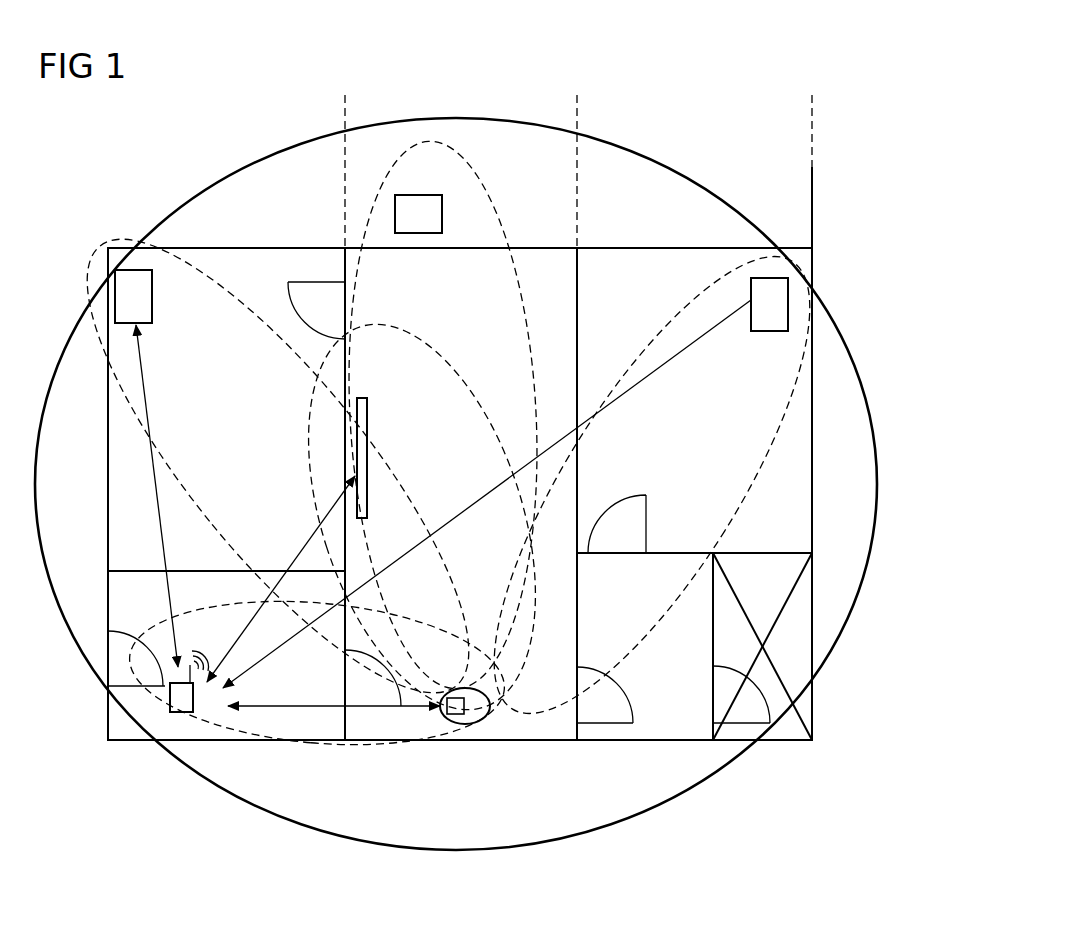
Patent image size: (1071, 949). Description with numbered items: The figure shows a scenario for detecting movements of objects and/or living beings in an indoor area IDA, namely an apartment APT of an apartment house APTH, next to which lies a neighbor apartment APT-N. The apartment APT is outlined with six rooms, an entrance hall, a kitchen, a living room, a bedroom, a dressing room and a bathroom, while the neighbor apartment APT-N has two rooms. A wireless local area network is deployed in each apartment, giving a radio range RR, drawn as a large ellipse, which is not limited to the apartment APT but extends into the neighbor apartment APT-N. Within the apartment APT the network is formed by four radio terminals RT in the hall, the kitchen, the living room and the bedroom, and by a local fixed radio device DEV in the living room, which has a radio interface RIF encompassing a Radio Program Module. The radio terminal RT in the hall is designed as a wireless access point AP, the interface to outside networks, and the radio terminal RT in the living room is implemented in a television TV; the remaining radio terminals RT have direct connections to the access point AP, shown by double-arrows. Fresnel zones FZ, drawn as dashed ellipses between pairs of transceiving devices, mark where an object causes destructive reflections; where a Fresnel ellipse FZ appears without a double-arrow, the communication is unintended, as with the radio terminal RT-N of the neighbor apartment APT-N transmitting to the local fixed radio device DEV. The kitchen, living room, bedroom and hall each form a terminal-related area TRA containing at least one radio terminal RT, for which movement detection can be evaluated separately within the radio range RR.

The radio range RR is at (643, 170).
The apartment APT is at (797, 460).
The indoor area IDA is at (460, 494).
The neighbor apartment APT-N is at (740, 118).
The apartment house APTH is at (822, 150).
The terminal-related area TRA is at (260, 284).
The Fresnel zone FZ is at (532, 355).
The radio terminal RT is at (152, 304).
The radio terminal of the neighbor apartment RT-N is at (442, 213).
The television TV is at (367, 430).
The wireless access point AP is at (183, 705).
The local fixed radio device DEV is at (480, 705).
The radio interface RIF is at (455, 715).